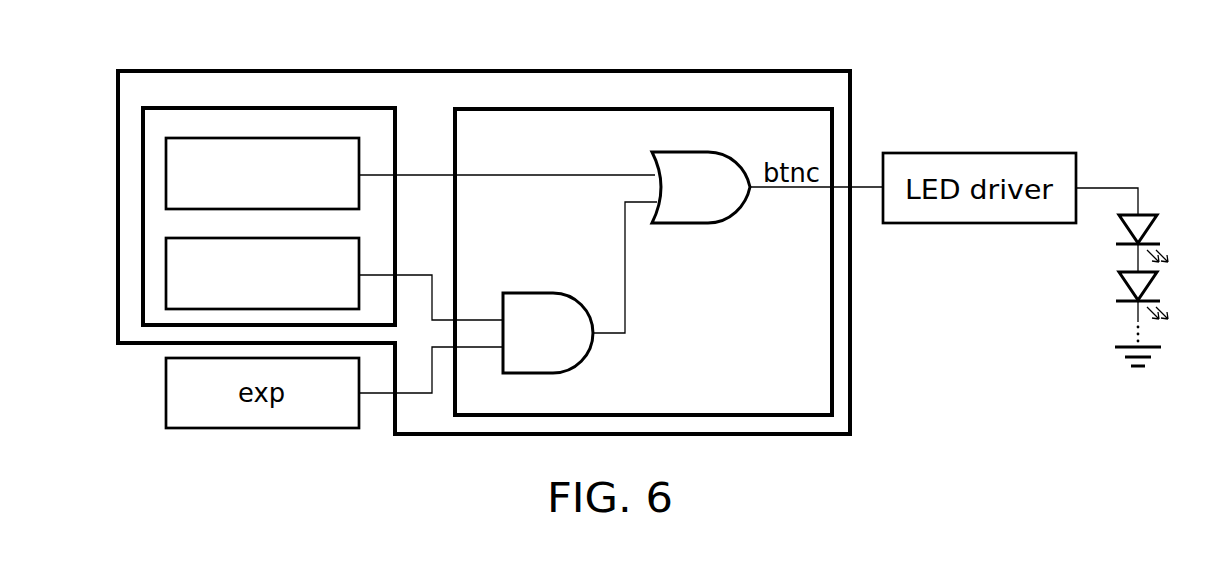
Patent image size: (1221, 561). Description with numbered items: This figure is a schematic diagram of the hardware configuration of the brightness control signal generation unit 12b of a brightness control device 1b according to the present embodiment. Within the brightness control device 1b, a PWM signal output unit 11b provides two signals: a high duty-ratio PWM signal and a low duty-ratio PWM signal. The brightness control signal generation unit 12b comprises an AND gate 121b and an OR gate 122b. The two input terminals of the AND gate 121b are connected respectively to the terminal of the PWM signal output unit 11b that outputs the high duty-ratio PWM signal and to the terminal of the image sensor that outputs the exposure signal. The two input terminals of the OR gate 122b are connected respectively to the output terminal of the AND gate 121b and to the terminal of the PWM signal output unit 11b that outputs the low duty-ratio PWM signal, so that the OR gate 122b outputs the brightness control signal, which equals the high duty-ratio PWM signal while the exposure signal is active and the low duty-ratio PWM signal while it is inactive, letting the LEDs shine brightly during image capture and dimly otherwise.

The brightness control device 1b is at (118, 71).
The PWM signal output unit 11b is at (143, 108).
The brightness control signal generation unit 12b is at (455, 109).
The AND gate 121b is at (503, 293).
The OR gate 122b is at (652, 225).